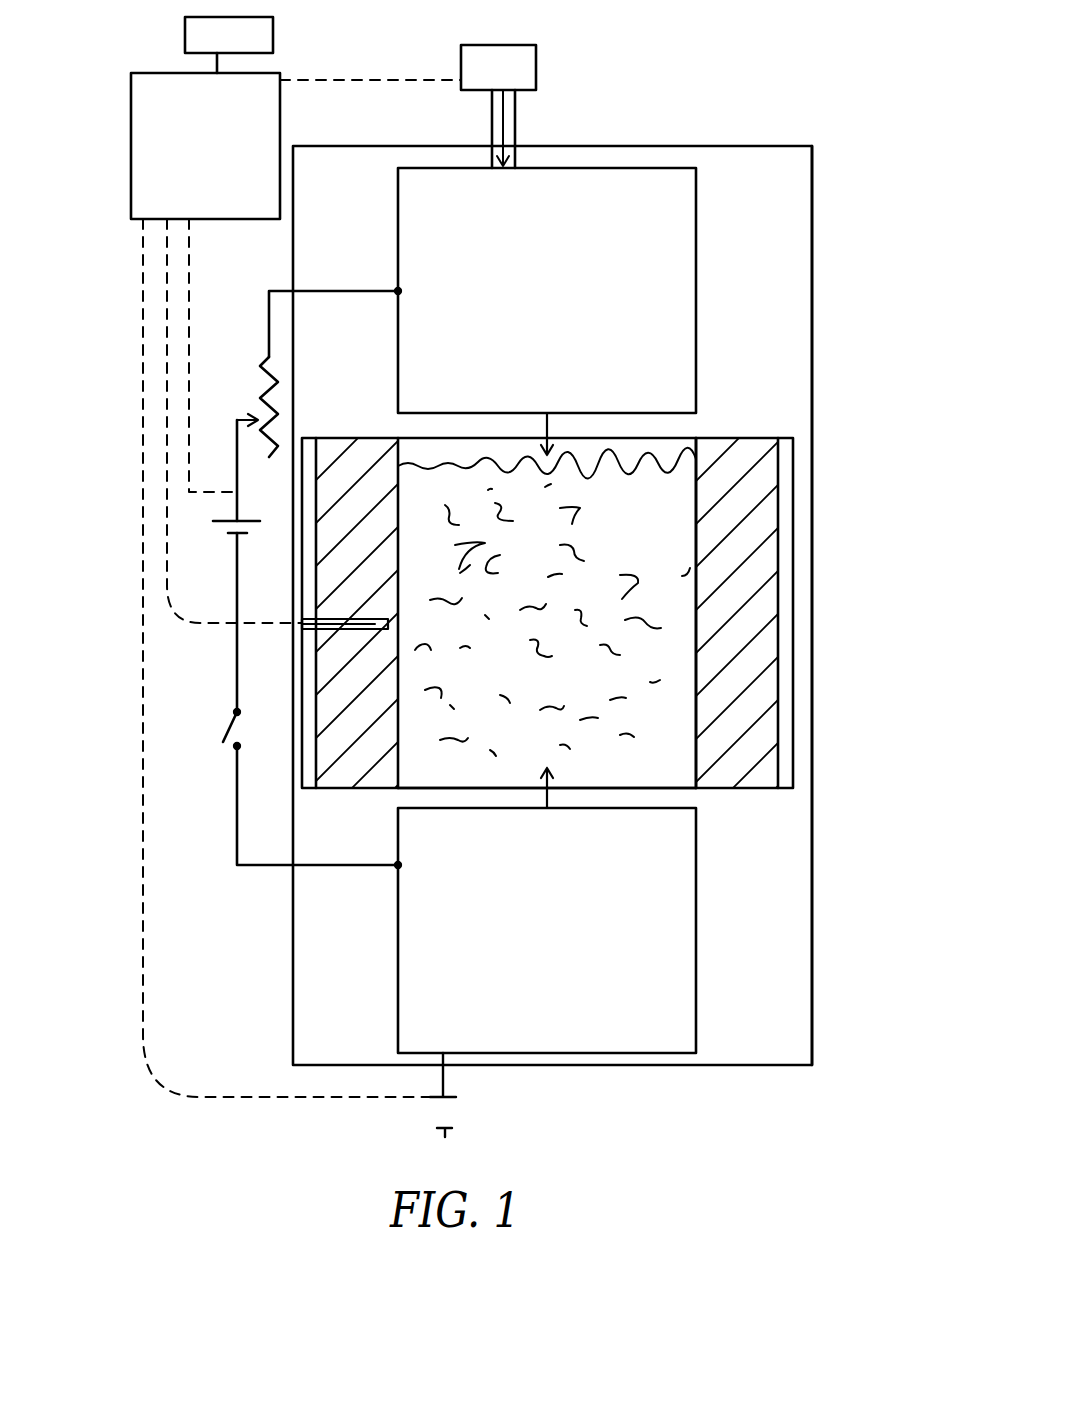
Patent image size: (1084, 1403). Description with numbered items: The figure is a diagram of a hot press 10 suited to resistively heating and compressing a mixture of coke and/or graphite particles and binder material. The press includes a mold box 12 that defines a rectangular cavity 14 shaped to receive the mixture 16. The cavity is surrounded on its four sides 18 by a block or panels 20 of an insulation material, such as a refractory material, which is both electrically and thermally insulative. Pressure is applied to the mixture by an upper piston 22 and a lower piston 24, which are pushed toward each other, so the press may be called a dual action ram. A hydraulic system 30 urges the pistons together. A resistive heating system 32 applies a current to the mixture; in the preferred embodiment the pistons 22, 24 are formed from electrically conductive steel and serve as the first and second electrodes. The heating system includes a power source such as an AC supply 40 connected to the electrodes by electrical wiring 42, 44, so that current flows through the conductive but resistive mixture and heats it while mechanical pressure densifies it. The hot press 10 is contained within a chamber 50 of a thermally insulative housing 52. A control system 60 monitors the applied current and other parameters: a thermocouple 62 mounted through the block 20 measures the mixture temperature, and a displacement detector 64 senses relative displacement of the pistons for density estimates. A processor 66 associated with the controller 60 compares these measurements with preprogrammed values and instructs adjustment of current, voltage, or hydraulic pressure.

The hot press 10 is at (743, 97).
The mold box 12 is at (732, 645).
The rectangular cavity 14 is at (641, 527).
The mixture 16 is at (660, 758).
The sides 18 is at (694, 689).
The block or panels of insulation material 20 is at (768, 548).
The upper piston 22 is at (677, 373).
The lower piston 24 is at (668, 947).
The hydraulic system 30 is at (520, 68).
The resistive heating system 32 is at (253, 377).
The AC supply 40 is at (258, 534).
The electrical wiring 42 is at (358, 291).
The electrical wiring 44 is at (312, 867).
The chamber 50 is at (797, 323).
The thermally insulative housing 52 is at (812, 227).
The control system 60 is at (152, 88).
The thermocouple 62 is at (338, 620).
The displacement detector 64 is at (463, 1112).
The processor 66 is at (258, 42).